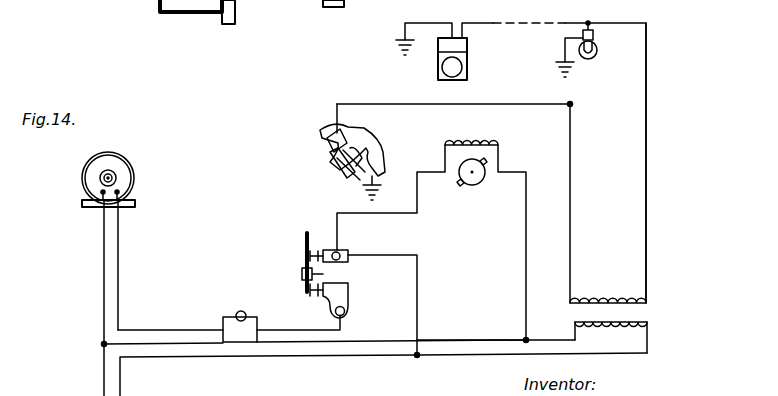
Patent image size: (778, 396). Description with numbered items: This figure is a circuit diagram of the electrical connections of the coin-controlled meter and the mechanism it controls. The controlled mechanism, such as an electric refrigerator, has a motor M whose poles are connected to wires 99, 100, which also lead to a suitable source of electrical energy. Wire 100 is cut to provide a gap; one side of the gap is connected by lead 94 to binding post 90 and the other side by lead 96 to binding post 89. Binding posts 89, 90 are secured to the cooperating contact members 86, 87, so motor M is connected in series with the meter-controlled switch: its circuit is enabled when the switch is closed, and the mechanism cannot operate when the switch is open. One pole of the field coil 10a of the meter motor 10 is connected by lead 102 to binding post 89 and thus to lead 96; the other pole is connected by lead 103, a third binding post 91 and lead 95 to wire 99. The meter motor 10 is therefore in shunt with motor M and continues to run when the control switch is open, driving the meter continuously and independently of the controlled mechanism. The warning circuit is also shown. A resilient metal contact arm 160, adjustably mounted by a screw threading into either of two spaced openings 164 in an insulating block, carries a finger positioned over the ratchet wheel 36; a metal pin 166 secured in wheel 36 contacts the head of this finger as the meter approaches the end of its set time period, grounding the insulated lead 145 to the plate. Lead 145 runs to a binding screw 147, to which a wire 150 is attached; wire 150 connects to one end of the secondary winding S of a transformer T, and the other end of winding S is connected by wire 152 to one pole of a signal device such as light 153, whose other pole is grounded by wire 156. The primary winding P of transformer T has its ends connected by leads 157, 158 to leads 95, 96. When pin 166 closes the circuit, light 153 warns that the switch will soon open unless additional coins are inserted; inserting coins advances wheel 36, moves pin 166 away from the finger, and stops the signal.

The meter motor 10 is at (500, 142).
The field coil 10a is at (469, 140).
The ratchet wheel 36 is at (376, 151).
The contact member 86 is at (350, 252).
The contact member 87 is at (350, 290).
The binding post 89 is at (334, 252).
The binding post 90 is at (346, 311).
The third binding post 91 is at (241, 311).
The lead wire 94 is at (148, 330).
The lead wire 95 is at (174, 344).
The lead wire 96 is at (245, 357).
The wire 99 is at (103, 276).
The wire 100 is at (120, 272).
The lead 102 is at (419, 213).
The lead 103 is at (500, 244).
The insulated lead 145 is at (493, 104).
The binding screw 147 is at (573, 104).
The wire 150 is at (572, 216).
The wire 152 is at (648, 216).
The light 153 is at (594, 38).
The wire 156 is at (403, 40).
The lead 157 is at (548, 340).
The lead 158 is at (466, 356).
The contact arm 160 is at (345, 138).
The spaced openings 164 is at (449, 40).
The metal pin 166 is at (160, 4).
The motor M is at (120, 188).
The secondary winding S is at (607, 300).
The primary winding P is at (611, 337).
The transformer T is at (661, 311).